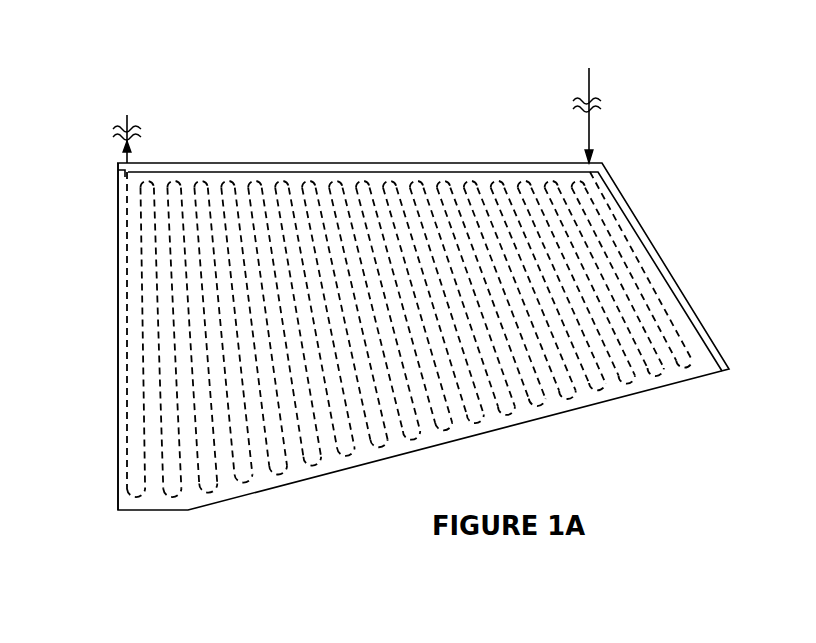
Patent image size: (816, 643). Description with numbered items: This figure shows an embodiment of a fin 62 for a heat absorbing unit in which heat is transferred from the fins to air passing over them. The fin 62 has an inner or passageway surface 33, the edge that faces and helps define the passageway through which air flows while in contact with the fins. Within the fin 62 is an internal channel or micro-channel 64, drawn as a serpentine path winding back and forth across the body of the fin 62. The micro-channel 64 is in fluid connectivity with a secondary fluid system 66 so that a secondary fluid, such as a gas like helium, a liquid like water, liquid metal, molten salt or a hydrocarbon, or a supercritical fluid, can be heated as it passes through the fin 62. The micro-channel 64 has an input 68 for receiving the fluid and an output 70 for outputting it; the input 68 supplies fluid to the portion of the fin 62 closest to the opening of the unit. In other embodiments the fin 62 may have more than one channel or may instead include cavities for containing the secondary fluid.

The inner or passageway surface 33 is at (310, 478).
The fin 62 is at (143, 108).
The internal channel or micro-channel 64 is at (632, 247).
The secondary fluid system 66 is at (591, 77).
The input 68 is at (591, 175).
The output 70 is at (124, 176).